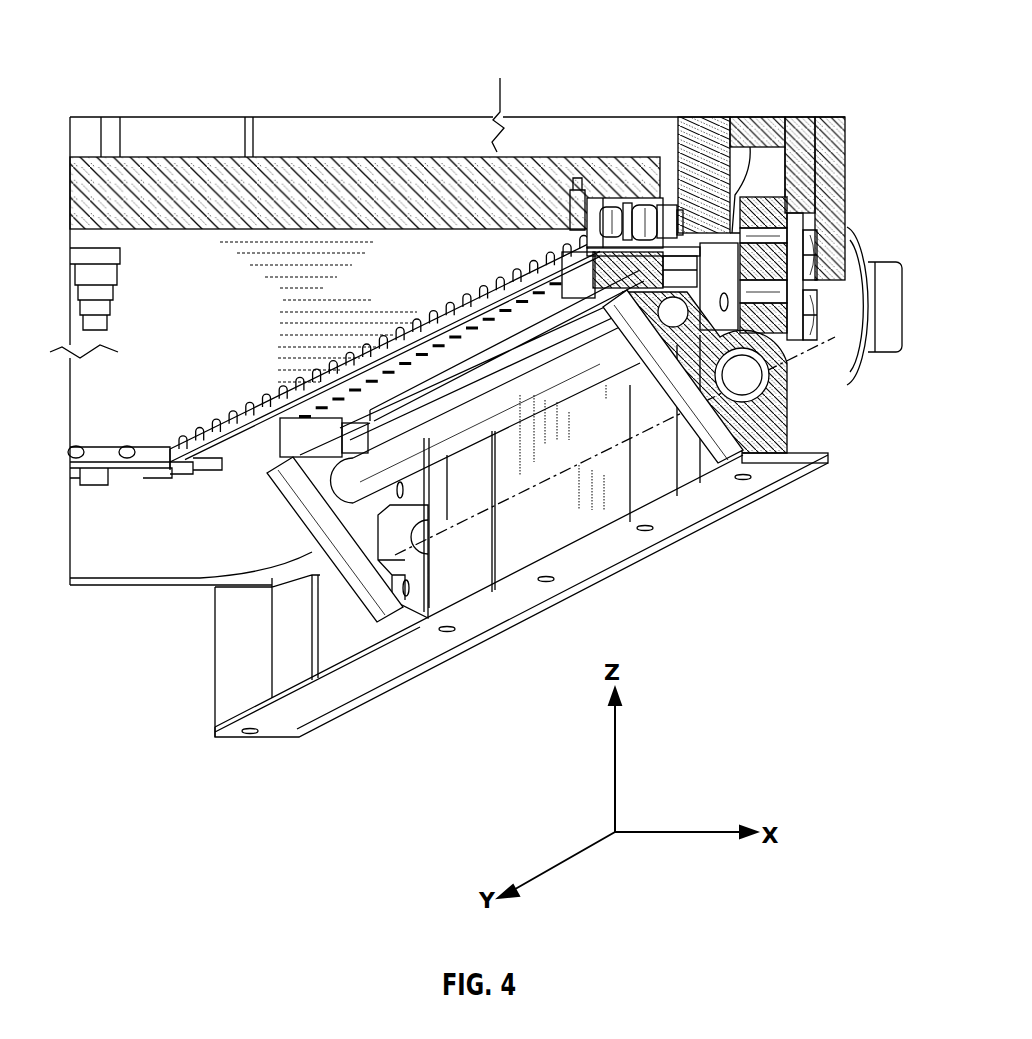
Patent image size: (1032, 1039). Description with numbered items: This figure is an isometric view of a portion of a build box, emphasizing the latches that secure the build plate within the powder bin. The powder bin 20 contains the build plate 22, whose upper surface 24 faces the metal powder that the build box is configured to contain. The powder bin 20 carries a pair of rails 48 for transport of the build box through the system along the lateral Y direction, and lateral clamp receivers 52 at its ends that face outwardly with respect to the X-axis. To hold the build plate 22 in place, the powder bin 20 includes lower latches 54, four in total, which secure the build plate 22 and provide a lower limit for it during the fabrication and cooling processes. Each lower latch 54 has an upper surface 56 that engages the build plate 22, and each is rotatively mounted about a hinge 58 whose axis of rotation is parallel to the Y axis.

The powder bin 20 is at (696, 148).
The build plate 22 is at (157, 190).
The upper surface 24 is at (373, 152).
The rails 48 is at (622, 555).
The lateral clamp receivers 52 is at (828, 165).
The lower latches 54 is at (730, 425).
The upper surface 56 is at (653, 300).
The hinge 58 is at (745, 376).